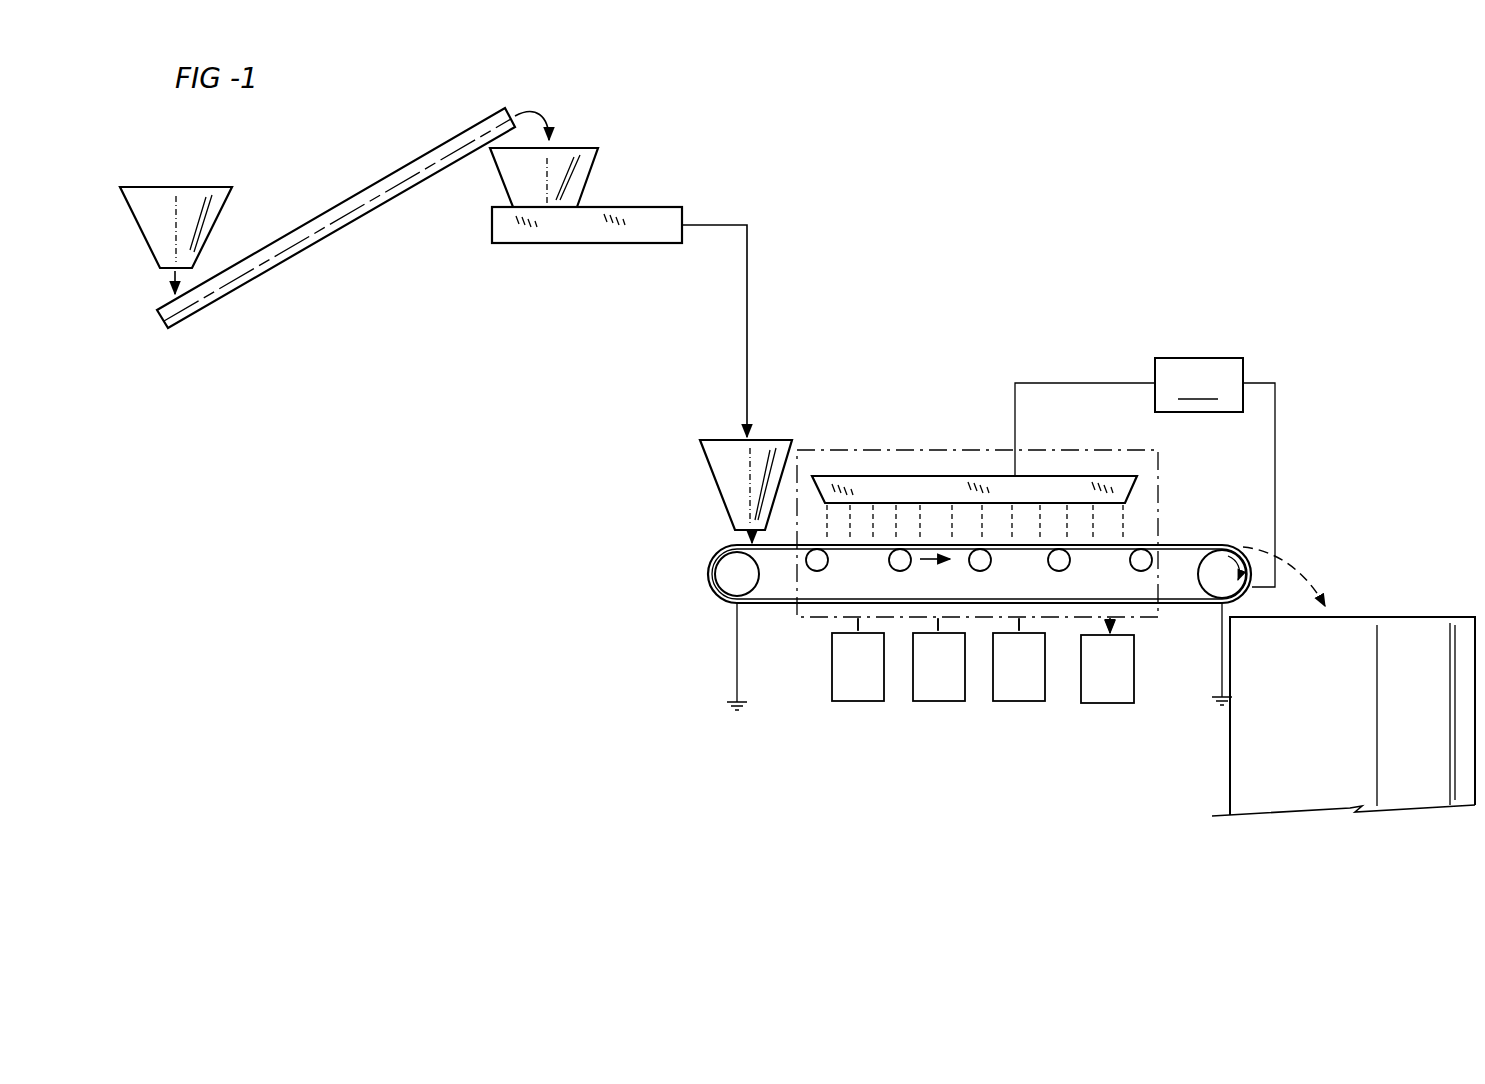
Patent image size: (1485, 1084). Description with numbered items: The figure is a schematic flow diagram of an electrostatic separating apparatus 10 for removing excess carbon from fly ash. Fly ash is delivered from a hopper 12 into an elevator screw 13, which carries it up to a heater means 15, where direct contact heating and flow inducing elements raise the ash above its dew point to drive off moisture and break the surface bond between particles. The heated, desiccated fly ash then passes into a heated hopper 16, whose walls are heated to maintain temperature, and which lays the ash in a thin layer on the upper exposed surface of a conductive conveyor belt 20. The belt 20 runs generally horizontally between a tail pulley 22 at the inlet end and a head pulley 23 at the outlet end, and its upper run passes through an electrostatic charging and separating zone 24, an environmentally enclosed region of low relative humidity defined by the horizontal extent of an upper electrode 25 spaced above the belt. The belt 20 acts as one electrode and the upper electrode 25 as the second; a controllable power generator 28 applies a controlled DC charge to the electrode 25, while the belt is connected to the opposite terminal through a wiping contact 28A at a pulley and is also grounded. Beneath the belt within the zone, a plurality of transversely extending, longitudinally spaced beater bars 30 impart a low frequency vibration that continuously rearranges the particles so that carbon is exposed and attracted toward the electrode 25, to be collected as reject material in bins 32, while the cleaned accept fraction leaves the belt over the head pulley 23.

The electrostatic separating apparatus 10 is at (878, 447).
The hopper 12 is at (207, 187).
The elevator screw 13 is at (333, 205).
The heater means 15 is at (658, 206).
The heated hopper 16 is at (713, 482).
The conveyor belt 20 is at (730, 547).
The tail pulley 22 is at (733, 593).
The head pulley 23 is at (1220, 566).
The electrostatic charging and separating zone 24 is at (931, 448).
The upper electrode 25 is at (862, 483).
The controllable power generator 28 is at (1215, 472).
The wiping contact 28A is at (1253, 587).
The beater bars 30 is at (895, 570).
The bins 32 is at (1090, 695).